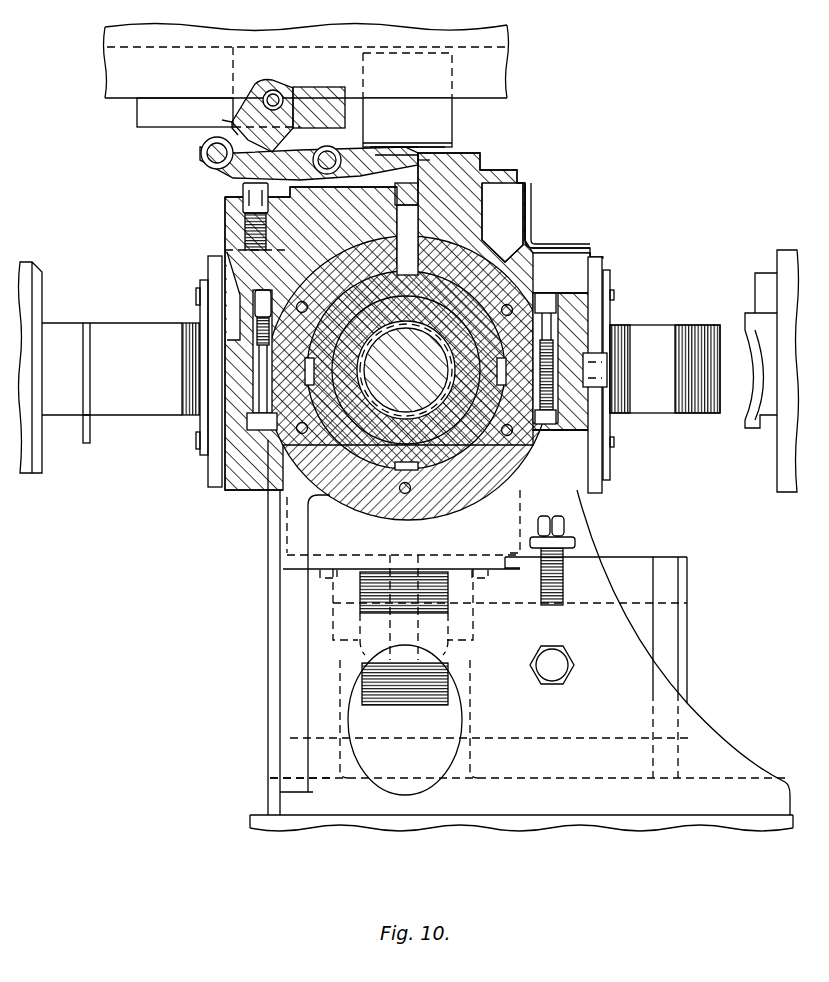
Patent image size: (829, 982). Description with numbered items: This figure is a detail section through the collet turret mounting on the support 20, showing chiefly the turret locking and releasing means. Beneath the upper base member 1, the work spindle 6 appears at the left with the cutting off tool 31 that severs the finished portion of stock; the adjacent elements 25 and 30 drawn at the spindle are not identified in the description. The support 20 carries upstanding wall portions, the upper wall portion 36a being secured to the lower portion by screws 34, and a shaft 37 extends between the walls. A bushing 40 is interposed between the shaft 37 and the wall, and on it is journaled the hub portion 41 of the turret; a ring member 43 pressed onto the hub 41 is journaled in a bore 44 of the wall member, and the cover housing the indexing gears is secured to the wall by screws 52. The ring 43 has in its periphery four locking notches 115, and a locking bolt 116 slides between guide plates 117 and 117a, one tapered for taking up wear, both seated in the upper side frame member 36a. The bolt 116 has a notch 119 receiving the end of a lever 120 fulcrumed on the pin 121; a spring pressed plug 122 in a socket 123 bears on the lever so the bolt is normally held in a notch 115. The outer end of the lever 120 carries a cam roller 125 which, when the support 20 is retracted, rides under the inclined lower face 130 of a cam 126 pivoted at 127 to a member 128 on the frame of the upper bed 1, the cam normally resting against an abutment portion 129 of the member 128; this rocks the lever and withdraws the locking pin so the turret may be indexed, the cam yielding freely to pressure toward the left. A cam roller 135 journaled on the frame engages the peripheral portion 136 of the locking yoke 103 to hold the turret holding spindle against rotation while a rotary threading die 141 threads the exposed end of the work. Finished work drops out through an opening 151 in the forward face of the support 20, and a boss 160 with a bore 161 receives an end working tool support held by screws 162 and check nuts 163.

The upper base member 1 is at (107, 66).
The work spindle 6 is at (38, 312).
The support 20 is at (655, 690).
The shaft 25 is at (142, 338).
The threaded portion 30 is at (186, 420).
The cutting off tool 31 is at (84, 440).
The screws 34 is at (262, 430).
The upper wall portion 36a is at (530, 245).
The shaft 37 is at (328, 500).
The bushing 40 is at (440, 440).
The hub portion 41 is at (470, 440).
The ring member 43 is at (535, 275).
The bore 44 is at (530, 280).
The screws 52 is at (512, 436).
The locking yoke 103 is at (212, 490).
The locking notches 115 is at (568, 340).
The locking bolt 116 is at (420, 230).
The guide plate 117 is at (397, 208).
The guide plate 117a is at (425, 165).
The notch 119 is at (420, 152).
The lever 120 is at (388, 150).
The pin 121 is at (340, 155).
The spring pressed plug 122 is at (243, 190).
The socket 123 is at (240, 210).
The cam roller 125 is at (201, 155).
The cam 126 is at (253, 97).
The pivot 127 is at (276, 90).
The member 128 is at (137, 118).
The abutment portion 129 is at (344, 88).
The inclined lower face 130 is at (228, 125).
The cam roller 135 is at (605, 385).
The peripheral portion 136 is at (202, 440).
The rotary threading die 141 is at (742, 330).
The opening 151 is at (462, 720).
The boss 160 is at (640, 560).
The bore 161 is at (660, 605).
The screws 162 is at (541, 580).
The check nuts 163 is at (576, 543).